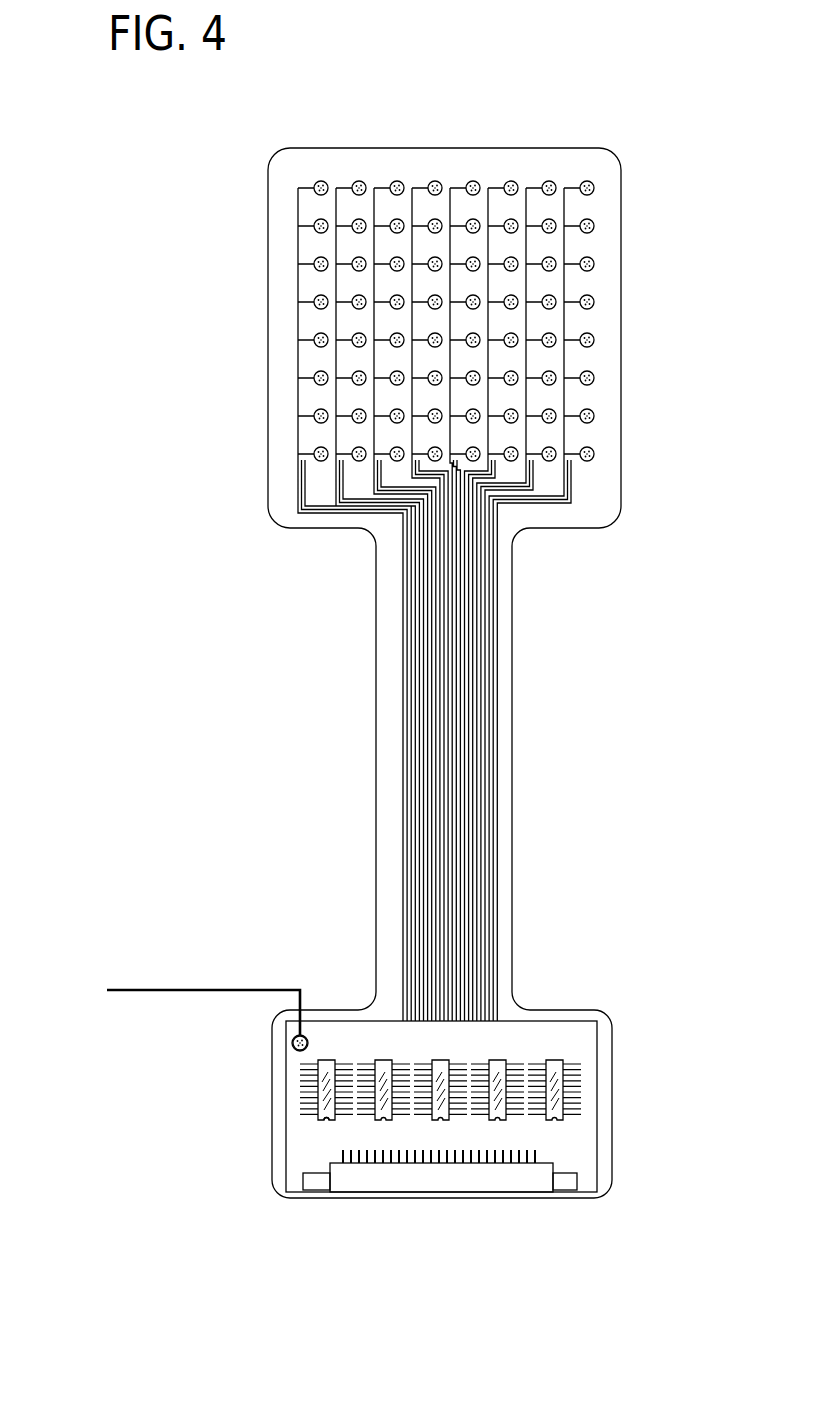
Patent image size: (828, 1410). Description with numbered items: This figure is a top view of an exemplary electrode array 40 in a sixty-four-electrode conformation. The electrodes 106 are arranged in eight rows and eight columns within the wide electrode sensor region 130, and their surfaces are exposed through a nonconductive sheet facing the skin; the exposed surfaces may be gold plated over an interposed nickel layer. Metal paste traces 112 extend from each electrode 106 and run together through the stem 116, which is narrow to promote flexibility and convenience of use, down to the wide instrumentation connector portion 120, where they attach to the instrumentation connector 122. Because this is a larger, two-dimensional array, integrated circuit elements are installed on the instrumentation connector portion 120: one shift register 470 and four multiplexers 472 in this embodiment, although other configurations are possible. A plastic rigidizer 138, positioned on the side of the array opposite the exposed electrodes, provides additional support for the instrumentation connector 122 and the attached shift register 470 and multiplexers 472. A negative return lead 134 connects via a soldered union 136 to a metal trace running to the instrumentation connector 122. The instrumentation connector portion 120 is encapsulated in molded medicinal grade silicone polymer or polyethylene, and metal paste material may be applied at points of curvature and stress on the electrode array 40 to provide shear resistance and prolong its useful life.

The electrode array 40 is at (443, 1338).
The electrodes 106 is at (478, 142).
The metal paste traces 112 is at (497, 960).
The stem 116 is at (512, 893).
The instrumentation connector portion 120 is at (675, 1002).
The instrumentation connector 122 is at (438, 1200).
The electrode sensor region 130 is at (318, 530).
The negative return lead 134 is at (102, 990).
The soldered union 136 is at (310, 1043).
The plastic rigidizer 138 is at (580, 1040).
The shift register 470 is at (556, 1092).
The multiplexers 472 is at (330, 1120).